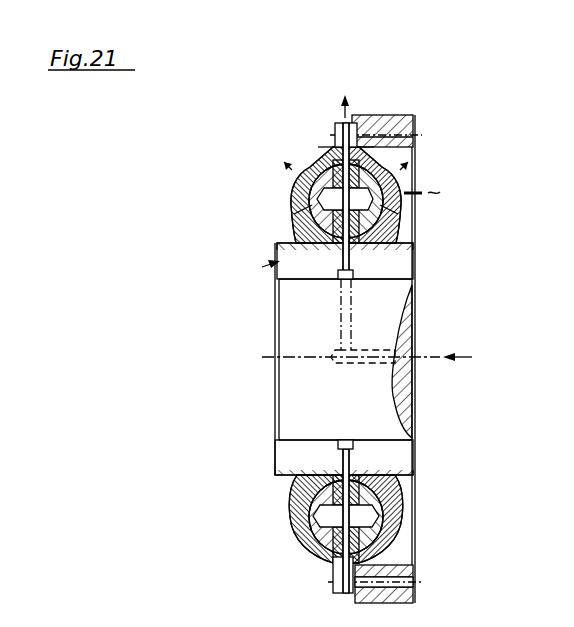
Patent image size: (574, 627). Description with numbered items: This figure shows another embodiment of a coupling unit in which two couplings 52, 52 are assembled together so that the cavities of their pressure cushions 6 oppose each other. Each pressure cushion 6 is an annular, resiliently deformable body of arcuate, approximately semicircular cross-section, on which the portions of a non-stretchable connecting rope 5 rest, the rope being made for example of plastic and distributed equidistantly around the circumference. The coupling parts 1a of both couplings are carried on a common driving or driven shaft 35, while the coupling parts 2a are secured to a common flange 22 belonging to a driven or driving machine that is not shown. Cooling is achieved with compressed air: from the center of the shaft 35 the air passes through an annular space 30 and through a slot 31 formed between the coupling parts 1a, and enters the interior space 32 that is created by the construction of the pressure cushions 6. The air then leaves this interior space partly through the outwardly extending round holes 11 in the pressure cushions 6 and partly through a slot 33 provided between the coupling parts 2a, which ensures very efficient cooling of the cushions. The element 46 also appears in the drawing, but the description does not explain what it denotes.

The coupling parts 1a is at (313, 278).
The coupling parts 2a is at (340, 126).
The connecting rope 5 is at (293, 175).
The pressure cushion 6 is at (300, 224).
The round holes 11 is at (296, 193).
The common flange 22 is at (387, 122).
The annular space 30 is at (353, 279).
The slot 31 is at (336, 246).
The interior space 32 is at (399, 210).
The slot 33 is at (417, 138).
The shaft 35 is at (350, 390).
The slide element 46 is at (268, 371).
The coupling 52 is at (353, 236).